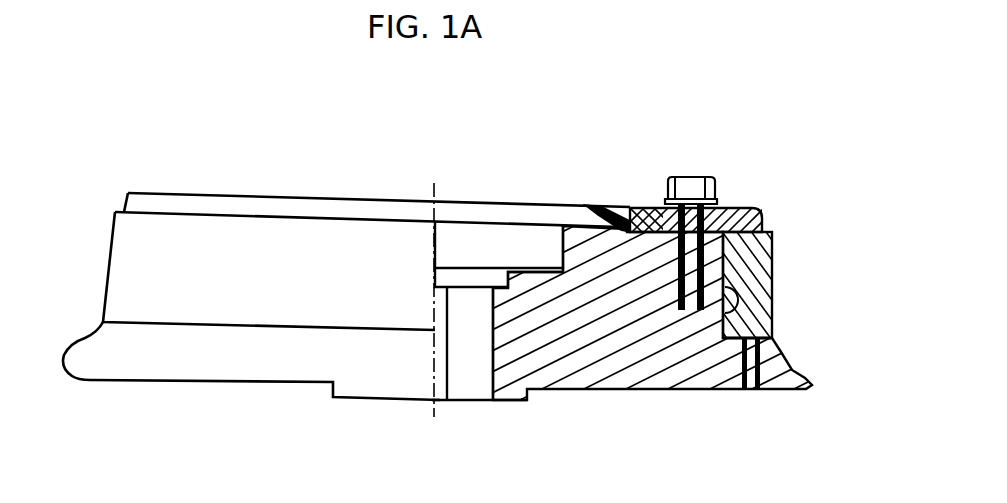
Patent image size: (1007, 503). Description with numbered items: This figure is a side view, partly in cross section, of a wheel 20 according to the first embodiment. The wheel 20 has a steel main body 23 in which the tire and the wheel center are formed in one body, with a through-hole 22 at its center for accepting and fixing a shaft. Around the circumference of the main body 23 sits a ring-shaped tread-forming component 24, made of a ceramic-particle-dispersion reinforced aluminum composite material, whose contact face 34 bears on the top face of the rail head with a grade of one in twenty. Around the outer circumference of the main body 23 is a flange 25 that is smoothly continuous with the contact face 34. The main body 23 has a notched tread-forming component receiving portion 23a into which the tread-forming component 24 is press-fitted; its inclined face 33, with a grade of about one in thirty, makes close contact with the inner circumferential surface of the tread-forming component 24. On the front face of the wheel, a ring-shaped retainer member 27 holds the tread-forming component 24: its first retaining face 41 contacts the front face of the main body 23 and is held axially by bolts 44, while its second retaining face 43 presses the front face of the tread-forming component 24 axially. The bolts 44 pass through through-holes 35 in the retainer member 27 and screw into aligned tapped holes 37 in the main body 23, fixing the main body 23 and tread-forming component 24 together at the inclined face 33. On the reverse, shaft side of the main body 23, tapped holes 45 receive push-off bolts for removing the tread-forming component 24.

The wheel 20 is at (464, 172).
The through-hole 22 is at (492, 383).
The main body 23 is at (603, 367).
The tread-forming component receiving portion 23a is at (764, 318).
The tread-forming component 24 is at (125, 243).
The flange 25 is at (82, 342).
The retainer member 27 is at (336, 197).
The inclined face 33 is at (718, 336).
The contact face 34 is at (774, 300).
The through-holes 35 is at (645, 203).
The tapped holes 37 is at (660, 322).
The first retaining face 41 is at (586, 206).
The second retaining face 43 is at (745, 203).
The bolts 44 is at (688, 176).
The tapped holes 45 is at (748, 390).